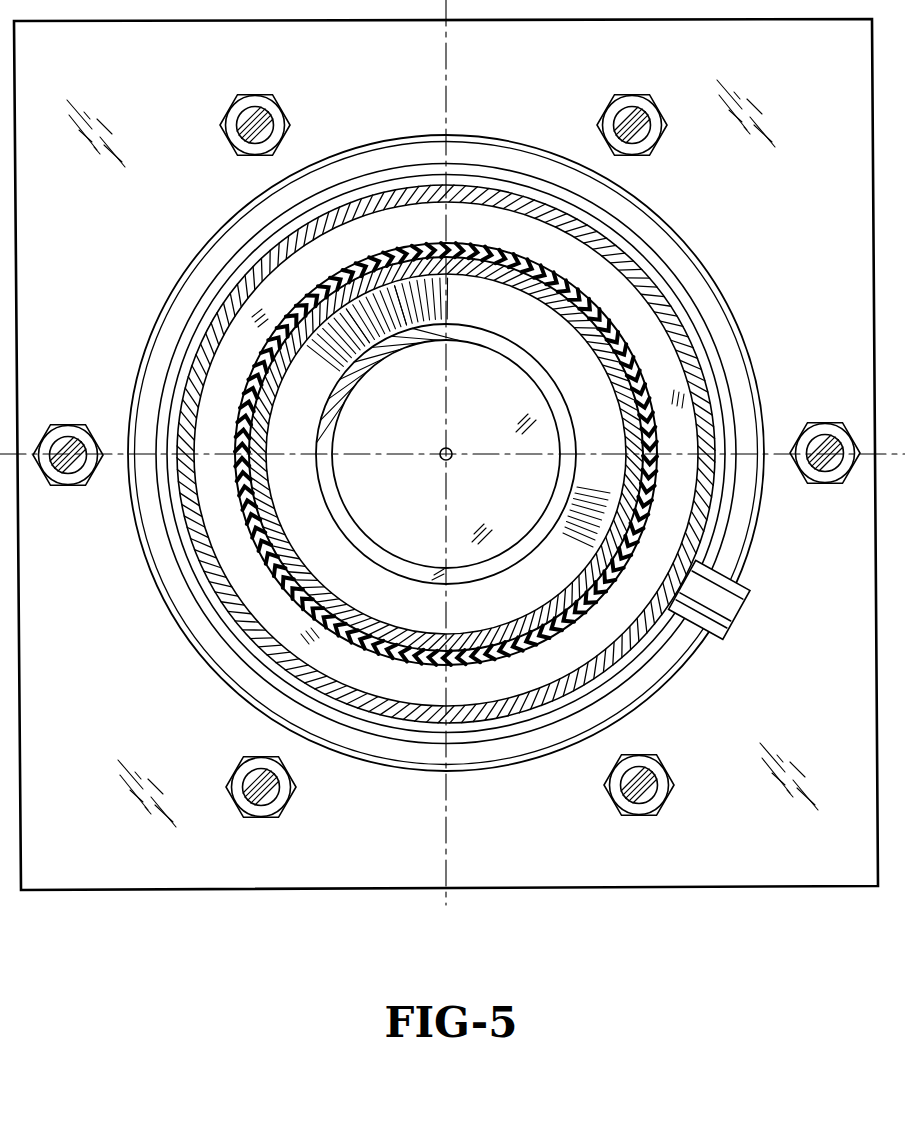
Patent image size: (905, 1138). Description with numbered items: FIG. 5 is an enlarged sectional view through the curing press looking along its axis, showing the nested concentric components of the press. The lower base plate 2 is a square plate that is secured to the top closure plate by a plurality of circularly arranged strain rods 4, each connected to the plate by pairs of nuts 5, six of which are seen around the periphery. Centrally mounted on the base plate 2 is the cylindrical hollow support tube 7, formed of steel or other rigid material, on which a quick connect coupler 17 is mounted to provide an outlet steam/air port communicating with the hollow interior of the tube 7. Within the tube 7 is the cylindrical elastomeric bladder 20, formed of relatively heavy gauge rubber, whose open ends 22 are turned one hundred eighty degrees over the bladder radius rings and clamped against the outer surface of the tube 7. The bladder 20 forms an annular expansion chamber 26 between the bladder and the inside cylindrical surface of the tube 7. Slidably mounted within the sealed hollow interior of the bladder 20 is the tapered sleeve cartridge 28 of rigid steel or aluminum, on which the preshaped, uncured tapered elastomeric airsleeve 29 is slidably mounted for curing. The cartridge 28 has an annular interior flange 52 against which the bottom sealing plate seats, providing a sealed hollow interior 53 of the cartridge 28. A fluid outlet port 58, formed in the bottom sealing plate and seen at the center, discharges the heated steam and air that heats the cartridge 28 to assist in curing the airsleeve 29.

The lower base plate 2 is at (605, 885).
The strain rods 4 is at (642, 788).
The nuts 5 is at (655, 755).
The support tube 7 is at (663, 308).
The quick connect coupler 17 is at (733, 608).
The elastomeric bladder 20 is at (481, 245).
The open ends of bladder 22 is at (743, 389).
The annular expansion chamber 26 is at (246, 581).
The tapered sleeve cartridge 28 is at (640, 378).
The tapered elastomeric airsleeve 29 is at (557, 287).
The annular interior flange 52 is at (330, 417).
The hollow interior of cartridge 53 is at (318, 557).
The fluid outlet port 58 is at (448, 458).